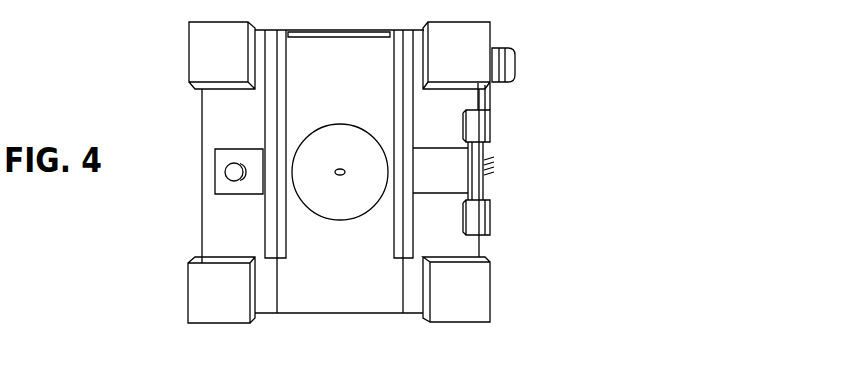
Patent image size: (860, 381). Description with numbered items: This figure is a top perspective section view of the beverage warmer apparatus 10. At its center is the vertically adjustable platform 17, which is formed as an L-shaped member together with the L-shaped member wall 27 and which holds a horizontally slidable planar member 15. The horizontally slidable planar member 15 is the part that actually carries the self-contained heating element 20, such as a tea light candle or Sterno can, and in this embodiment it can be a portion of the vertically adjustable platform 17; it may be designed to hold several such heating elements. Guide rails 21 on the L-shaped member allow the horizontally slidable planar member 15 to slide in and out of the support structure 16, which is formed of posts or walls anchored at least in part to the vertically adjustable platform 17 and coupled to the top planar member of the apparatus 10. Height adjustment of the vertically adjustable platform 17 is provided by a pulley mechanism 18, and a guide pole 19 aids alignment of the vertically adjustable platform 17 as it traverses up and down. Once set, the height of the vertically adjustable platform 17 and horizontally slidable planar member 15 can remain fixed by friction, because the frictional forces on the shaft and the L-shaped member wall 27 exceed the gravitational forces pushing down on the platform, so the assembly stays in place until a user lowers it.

The beverage warmer apparatus 10 is at (80, 225).
The horizontally slidable planar member 15 is at (349, 286).
The support structure 16 is at (474, 304).
The vertically adjustable platform 17 is at (230, 148).
The pulley mechanism 18 is at (515, 72).
The guide pole 19 is at (227, 173).
The self-contained heating element 20 is at (354, 161).
The guide rails 21 is at (286, 57).
The L-shaped member wall 27 is at (476, 189).